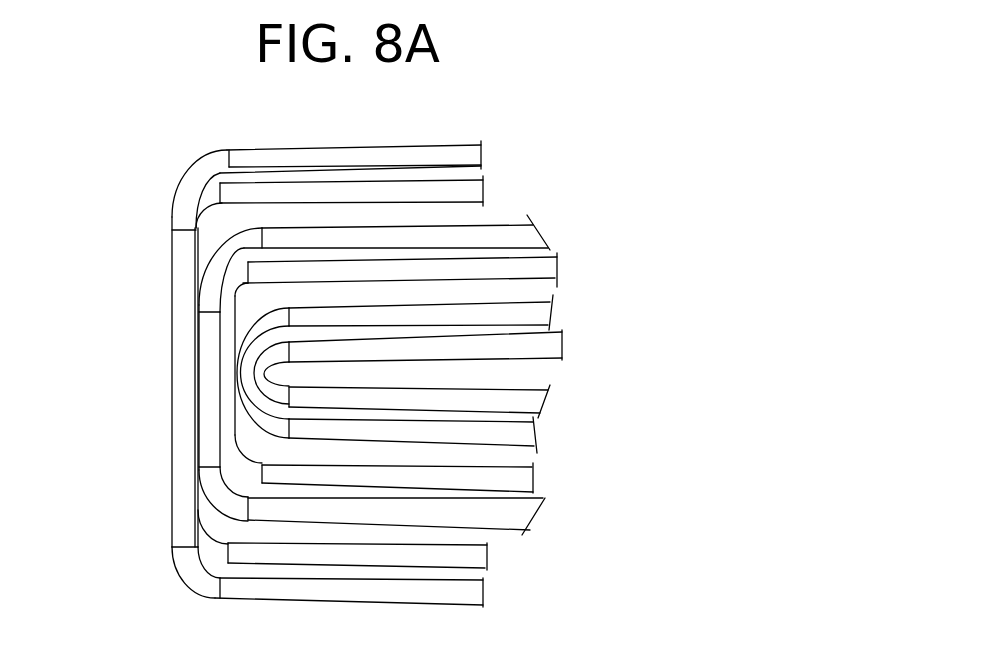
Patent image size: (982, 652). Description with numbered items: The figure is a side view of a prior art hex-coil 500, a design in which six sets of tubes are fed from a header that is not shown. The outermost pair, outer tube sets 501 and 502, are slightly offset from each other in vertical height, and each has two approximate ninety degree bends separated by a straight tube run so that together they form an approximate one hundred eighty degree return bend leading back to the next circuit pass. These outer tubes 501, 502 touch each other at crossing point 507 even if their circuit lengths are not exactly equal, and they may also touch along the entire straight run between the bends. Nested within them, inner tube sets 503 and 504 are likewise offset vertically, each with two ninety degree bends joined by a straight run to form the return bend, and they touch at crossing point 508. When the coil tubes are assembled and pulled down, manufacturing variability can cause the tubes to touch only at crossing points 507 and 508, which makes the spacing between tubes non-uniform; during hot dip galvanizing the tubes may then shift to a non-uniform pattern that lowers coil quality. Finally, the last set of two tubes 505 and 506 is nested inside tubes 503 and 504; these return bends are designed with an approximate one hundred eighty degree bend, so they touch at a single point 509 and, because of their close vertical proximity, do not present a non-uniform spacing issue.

The prior art hex-coil 500 is at (466, 108).
The outer tube set 501 is at (483, 150).
The outer tube set 502 is at (486, 189).
The inner tube set 503 is at (538, 228).
The inner tube set 504 is at (558, 270).
The innermost tube 505 is at (553, 312).
The innermost tube 506 is at (563, 345).
The crossing point 507 is at (190, 208).
The crossing point 508 is at (215, 290).
The touch point 509 is at (250, 392).